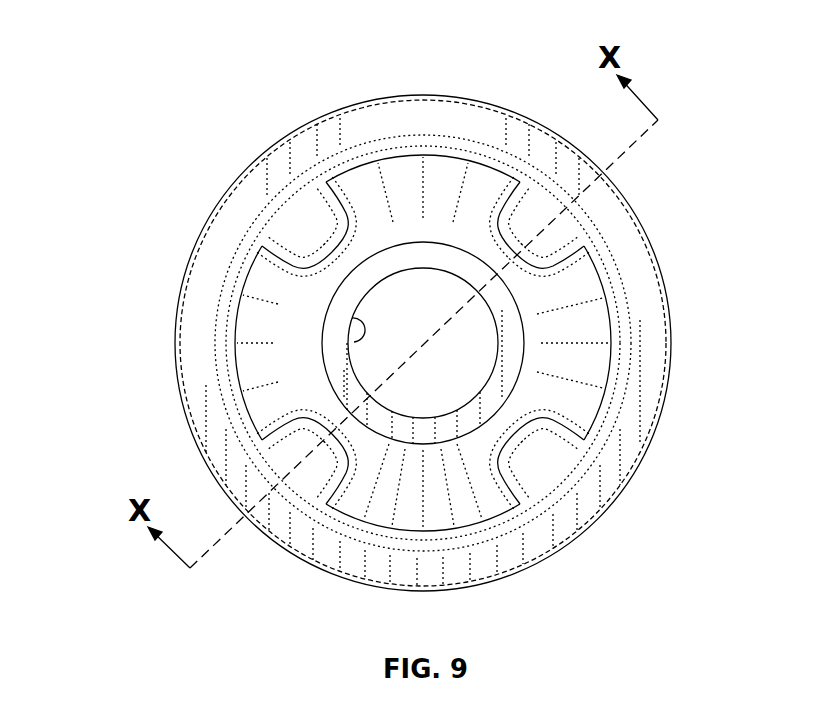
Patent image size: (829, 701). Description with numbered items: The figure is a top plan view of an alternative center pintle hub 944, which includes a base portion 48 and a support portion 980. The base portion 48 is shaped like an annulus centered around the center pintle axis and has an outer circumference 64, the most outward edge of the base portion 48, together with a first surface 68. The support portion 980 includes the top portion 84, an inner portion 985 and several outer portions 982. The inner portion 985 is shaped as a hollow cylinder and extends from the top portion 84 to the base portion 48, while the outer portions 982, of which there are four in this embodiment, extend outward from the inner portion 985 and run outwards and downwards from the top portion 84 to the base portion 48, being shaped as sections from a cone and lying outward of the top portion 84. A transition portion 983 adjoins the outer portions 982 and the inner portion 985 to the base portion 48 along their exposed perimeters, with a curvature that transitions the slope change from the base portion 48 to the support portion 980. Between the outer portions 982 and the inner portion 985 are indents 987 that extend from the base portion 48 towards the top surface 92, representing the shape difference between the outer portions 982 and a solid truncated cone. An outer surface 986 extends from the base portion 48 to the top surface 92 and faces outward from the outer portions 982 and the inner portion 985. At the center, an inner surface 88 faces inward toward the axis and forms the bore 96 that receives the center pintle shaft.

The alternative center pintle hub 944 is at (248, 72).
The inner portion 985 is at (357, 175).
The transition portion 983 is at (407, 140).
The bore 96 is at (392, 303).
The outer surface 986 is at (480, 177).
The indents 987 is at (311, 224).
The top portion 84 is at (484, 298).
The first surface 68 is at (212, 254).
The outer circumference 64 is at (183, 290).
The base portion 48 is at (190, 342).
The top surface 92 is at (505, 372).
The support portion 980 is at (688, 362).
The inner surface 88 is at (352, 318).
The outer portions 982 is at (512, 432).